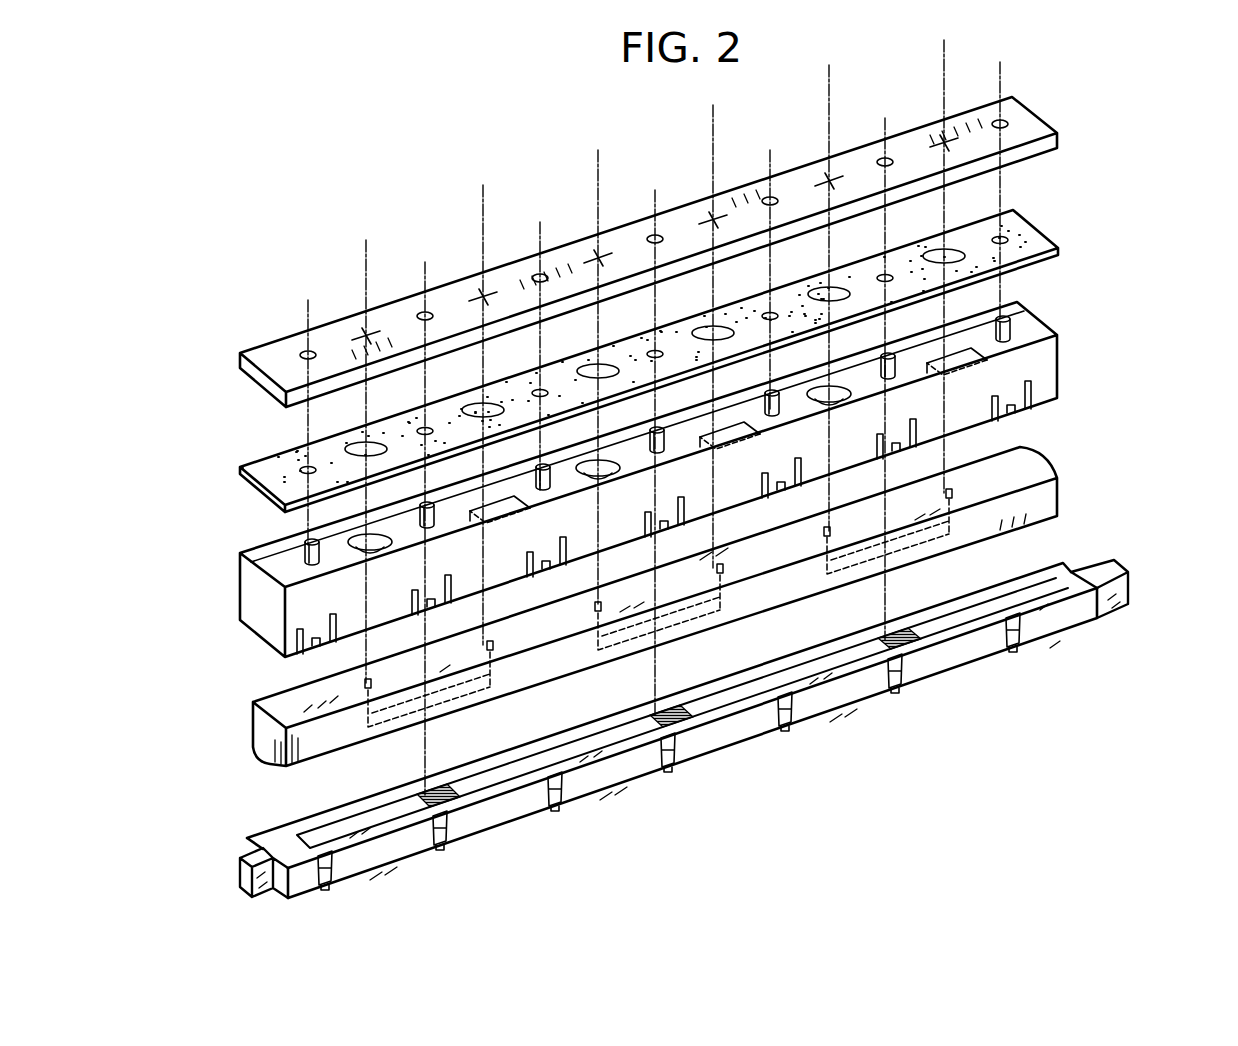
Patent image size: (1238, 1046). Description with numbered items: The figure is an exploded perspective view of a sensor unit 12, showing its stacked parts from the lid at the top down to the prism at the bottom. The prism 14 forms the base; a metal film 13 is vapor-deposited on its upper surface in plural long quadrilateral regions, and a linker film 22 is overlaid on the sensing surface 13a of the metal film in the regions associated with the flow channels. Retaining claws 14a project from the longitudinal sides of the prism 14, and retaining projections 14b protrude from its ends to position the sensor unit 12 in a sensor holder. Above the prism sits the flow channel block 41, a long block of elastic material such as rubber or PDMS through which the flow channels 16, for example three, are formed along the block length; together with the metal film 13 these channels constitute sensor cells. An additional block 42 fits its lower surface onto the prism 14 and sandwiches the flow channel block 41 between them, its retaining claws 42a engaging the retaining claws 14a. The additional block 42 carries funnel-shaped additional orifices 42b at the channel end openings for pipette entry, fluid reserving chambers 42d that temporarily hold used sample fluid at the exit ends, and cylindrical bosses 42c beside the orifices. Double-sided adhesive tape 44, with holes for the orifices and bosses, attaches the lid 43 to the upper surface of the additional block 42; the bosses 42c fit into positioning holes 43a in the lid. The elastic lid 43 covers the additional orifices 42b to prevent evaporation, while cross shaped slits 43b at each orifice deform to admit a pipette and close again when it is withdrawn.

The sensor unit 12 is at (400, 160).
The metal film 13 is at (1065, 578).
The sensing surface 13a is at (330, 830).
The prism 14 is at (882, 703).
The retaining claws 14a is at (1015, 652).
The retaining projections 14b is at (1130, 588).
The flow channel 16 is at (872, 572).
The linker film 22 is at (893, 637).
The flow channel block 41 is at (1065, 487).
The additional block 42 is at (1065, 366).
The retaining claws 42a is at (1040, 408).
The additional orifice 42b is at (848, 392).
The bosses 42c is at (1012, 312).
The fluid reserving chamber 42d is at (958, 368).
The lid 43 is at (1063, 122).
The positioning holes 43a is at (999, 118).
The cross shaped slit 43b is at (829, 177).
The double-sided adhesive tape 44 is at (1062, 235).